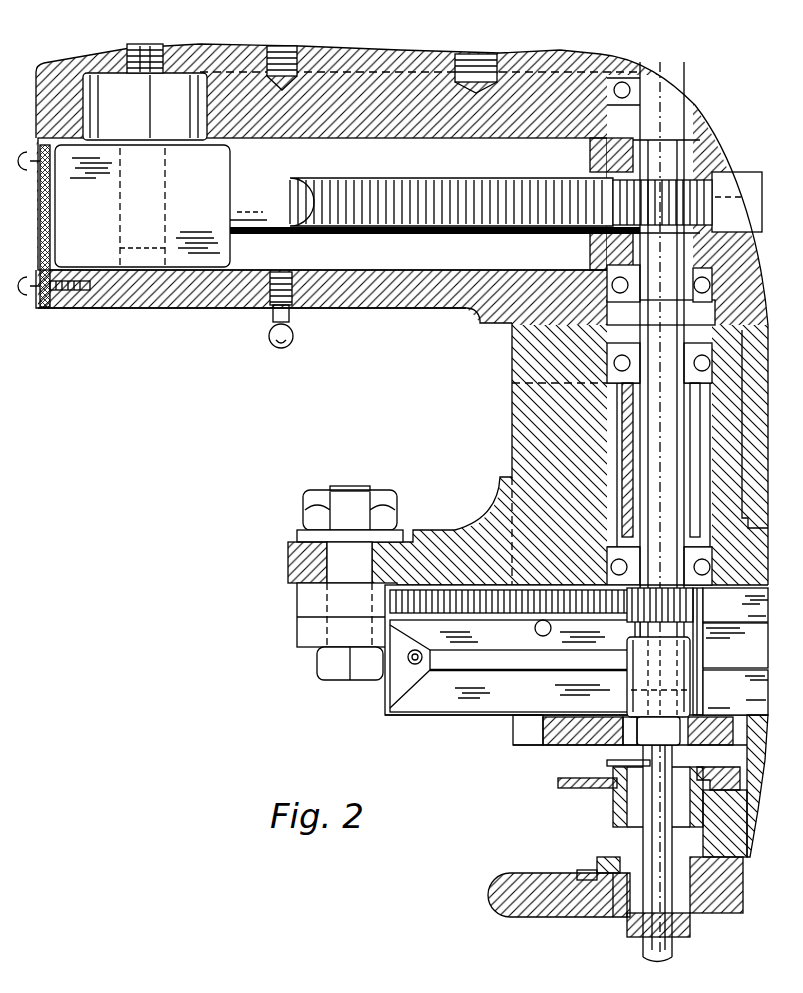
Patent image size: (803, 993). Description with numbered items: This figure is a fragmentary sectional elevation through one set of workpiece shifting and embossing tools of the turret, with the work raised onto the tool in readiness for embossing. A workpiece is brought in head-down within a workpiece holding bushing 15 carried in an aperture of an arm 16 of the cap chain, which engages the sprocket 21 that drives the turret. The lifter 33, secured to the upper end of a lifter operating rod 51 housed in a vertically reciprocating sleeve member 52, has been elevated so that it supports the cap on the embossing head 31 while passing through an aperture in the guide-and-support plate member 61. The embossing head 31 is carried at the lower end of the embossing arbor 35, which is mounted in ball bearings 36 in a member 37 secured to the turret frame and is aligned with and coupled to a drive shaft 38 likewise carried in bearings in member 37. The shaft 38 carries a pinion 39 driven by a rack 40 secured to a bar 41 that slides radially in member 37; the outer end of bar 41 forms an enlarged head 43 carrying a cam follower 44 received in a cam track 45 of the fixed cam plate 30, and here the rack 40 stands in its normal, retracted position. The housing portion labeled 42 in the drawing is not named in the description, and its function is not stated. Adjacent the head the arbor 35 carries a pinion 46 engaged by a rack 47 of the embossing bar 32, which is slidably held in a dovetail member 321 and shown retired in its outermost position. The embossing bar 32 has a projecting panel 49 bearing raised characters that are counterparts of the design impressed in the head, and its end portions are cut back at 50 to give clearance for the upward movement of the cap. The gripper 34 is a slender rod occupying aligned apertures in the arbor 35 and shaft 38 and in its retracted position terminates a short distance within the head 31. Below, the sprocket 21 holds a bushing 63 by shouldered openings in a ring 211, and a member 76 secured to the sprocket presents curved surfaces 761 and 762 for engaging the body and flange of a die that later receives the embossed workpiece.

The workpiece holding bushing 15 is at (613, 804).
The arm 16 is at (566, 790).
The sprocket 21 is at (566, 905).
The cam plate 30 is at (413, 62).
The embossing head 31 is at (690, 636).
The embossing bar 32 is at (497, 690).
The lifter 33 is at (651, 731).
The gripper 34 is at (645, 446).
The embossing arbor 35 is at (676, 503).
The ball bearings 36 is at (712, 360).
The member 37 is at (512, 357).
The drive shaft 38 is at (678, 312).
The pinion 39 is at (712, 188).
The rack 40 is at (390, 216).
The bar 41 is at (262, 233).
The bottom plate 42 is at (337, 300).
The enlarged head 43 is at (192, 258).
The cam follower 44 is at (120, 88).
The cam track 45 is at (198, 72).
The pinion 46 is at (700, 606).
The rack 47 is at (478, 612).
The projecting panel 49 is at (478, 671).
The cut-back portion 50 is at (393, 688).
The lifter operating rod 51 is at (640, 762).
The sleeve member 52 is at (690, 930).
The guide-and-support plate member 61 is at (520, 746).
The bushing 63 is at (606, 857).
The member 76 is at (750, 832).
The ring 211 is at (748, 862).
The dovetail member 321 is at (690, 678).
The curved surface 761 is at (710, 811).
The curved surface 762 is at (700, 771).